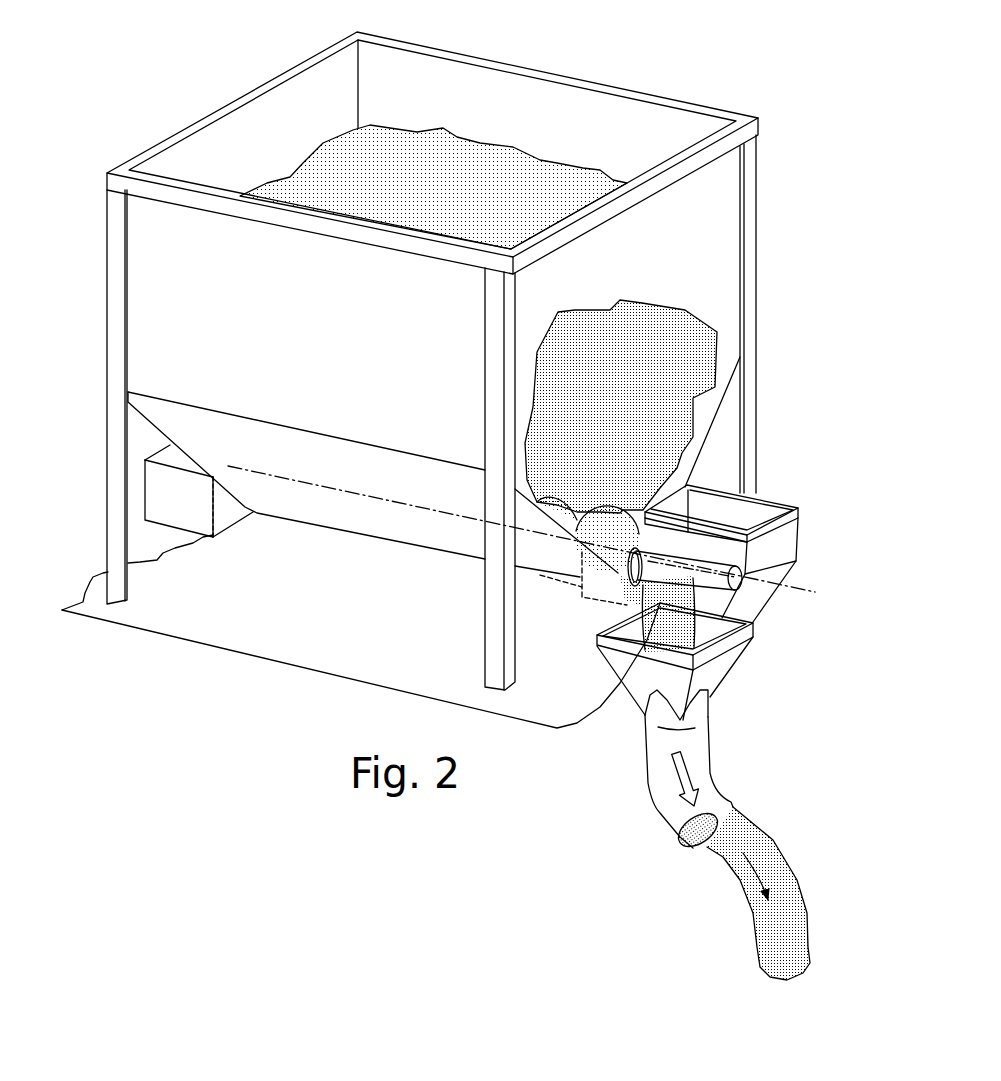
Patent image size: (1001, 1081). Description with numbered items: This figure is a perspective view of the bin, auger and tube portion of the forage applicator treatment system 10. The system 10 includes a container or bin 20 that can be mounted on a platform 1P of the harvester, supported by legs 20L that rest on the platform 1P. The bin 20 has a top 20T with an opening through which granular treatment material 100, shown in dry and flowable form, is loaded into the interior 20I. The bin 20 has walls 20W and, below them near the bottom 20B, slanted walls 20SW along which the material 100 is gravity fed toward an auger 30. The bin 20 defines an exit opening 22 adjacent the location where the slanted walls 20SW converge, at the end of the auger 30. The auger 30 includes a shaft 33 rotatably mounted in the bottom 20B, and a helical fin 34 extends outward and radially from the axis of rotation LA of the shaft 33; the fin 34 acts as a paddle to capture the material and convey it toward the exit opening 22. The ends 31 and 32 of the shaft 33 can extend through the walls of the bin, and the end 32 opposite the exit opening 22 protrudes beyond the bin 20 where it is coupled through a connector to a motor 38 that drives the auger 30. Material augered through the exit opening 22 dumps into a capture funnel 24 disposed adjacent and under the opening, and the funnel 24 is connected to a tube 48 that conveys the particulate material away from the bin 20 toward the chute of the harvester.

The system 10 is at (195, 88).
The treatment material 100 is at (452, 150).
The bin 20 is at (766, 118).
The interior 20I is at (581, 140).
The walls 20W is at (708, 205).
The top 20T is at (105, 254).
The legs 20L is at (117, 543).
The bottom 20B is at (372, 565).
The slanted walls 20SW is at (327, 528).
The motor 38 is at (167, 497).
The end of the shaft 32 is at (213, 493).
The platform 1P is at (339, 661).
The helical fin 34 is at (620, 510).
The capture funnel 24 is at (798, 531).
The axis of rotation LA is at (800, 588).
The exit opening 22 is at (621, 575).
The auger 30 is at (615, 603).
The end of the shaft 31 is at (645, 590).
The shaft 33 is at (720, 582).
The tube 48 is at (717, 788).